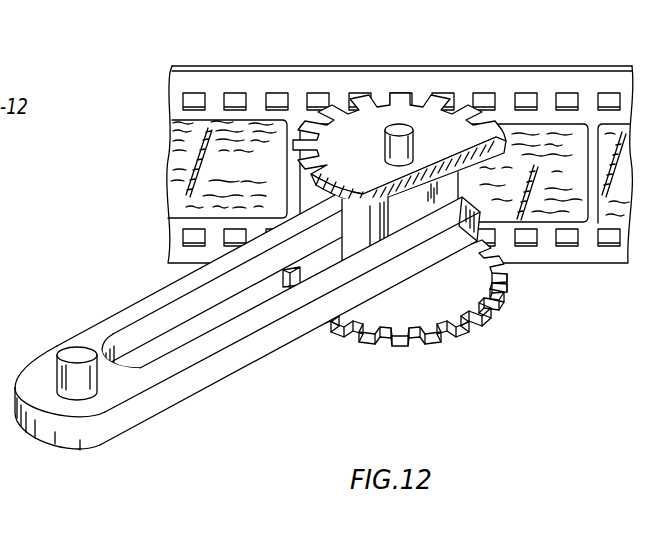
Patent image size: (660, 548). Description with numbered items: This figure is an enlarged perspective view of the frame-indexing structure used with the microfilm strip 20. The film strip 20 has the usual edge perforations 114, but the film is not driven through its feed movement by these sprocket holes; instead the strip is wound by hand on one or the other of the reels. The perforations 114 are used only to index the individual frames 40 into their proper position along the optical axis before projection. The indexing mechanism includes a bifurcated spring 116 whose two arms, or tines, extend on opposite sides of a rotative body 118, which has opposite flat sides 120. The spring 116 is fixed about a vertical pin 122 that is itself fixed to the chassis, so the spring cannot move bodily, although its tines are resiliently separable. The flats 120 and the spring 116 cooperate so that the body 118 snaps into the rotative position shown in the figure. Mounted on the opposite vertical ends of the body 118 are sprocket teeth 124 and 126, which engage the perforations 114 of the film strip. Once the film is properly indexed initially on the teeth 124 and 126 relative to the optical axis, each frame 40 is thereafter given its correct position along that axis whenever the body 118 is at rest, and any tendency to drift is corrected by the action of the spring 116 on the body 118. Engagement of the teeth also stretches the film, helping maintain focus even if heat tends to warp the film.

The microfilm strip 20 is at (232, 75).
The frame 40 is at (515, 130).
The edge perforation 114 is at (568, 100).
The bifurcated spring 116 is at (252, 324).
The rotative body 118 is at (282, 282).
The flat side 120 is at (432, 268).
The vertical pin 122 is at (72, 352).
The sprocket tooth 124 is at (402, 94).
The sprocket tooth 126 is at (450, 320).